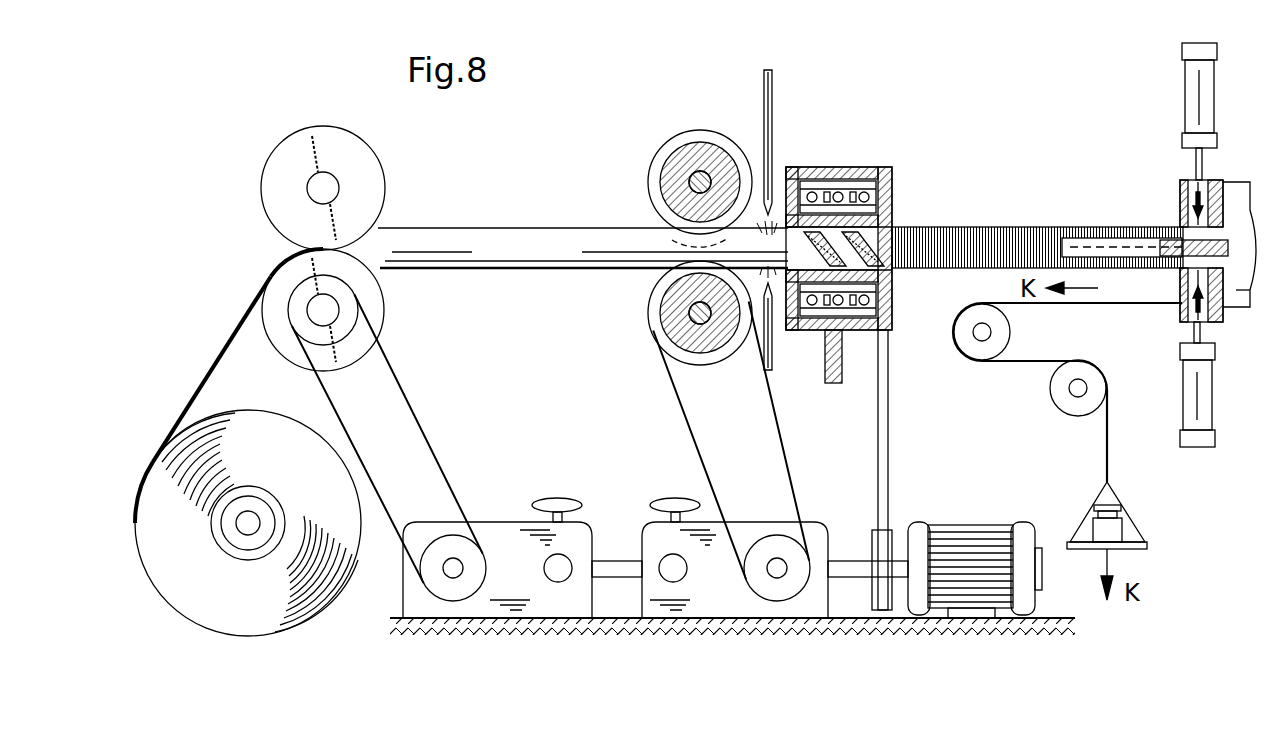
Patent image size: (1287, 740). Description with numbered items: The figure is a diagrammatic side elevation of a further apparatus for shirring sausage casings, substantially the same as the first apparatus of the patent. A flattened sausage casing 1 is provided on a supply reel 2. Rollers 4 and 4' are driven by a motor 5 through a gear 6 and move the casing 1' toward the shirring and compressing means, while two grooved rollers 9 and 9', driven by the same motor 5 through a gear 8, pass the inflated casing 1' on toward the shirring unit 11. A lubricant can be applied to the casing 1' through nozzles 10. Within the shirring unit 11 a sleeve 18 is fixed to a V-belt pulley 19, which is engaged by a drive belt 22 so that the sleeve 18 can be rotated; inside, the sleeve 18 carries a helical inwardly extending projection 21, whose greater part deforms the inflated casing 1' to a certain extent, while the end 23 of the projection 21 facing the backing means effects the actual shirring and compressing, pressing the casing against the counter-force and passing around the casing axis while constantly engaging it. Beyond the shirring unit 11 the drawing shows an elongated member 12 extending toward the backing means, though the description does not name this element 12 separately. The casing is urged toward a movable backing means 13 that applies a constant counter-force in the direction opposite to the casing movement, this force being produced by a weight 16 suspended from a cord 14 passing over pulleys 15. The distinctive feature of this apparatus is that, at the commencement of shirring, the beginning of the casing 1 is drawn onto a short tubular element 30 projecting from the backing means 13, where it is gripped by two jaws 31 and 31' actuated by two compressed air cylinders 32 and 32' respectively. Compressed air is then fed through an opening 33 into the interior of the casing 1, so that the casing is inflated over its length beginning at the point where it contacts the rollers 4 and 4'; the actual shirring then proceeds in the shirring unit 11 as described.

The flattened sausage casing 1 is at (229, 386).
The inflated casing 1' is at (583, 230).
The supply reel 2 is at (308, 598).
The roller 4 is at (343, 310).
The roller 4' is at (317, 183).
The motor 5 is at (968, 525).
The gear 6 is at (507, 605).
The gear 8 is at (766, 605).
The grooved roller 9 is at (686, 313).
The grooved roller 9' is at (700, 173).
The nozzle 10 is at (773, 80).
The shirring unit 11 is at (822, 168).
The mandrel 12 is at (1020, 227).
The backing means 13 is at (1238, 187).
The cord 14 is at (1109, 448).
The pulley 15 is at (975, 352).
The weight 16 is at (1120, 530).
The sleeve 18 is at (893, 196).
The V-belt pulley 19 is at (893, 298).
The helical projection 21 is at (892, 214).
The drive belt 22 is at (889, 447).
The end of projection 23 is at (898, 232).
The tubular element 30 is at (1160, 228).
The jaw 31 is at (1182, 295).
The jaw 31' is at (1181, 197).
The compressed air cylinder 32 is at (1221, 390).
The compressed air cylinder 32' is at (1175, 111).
The opening 33 is at (1230, 242).